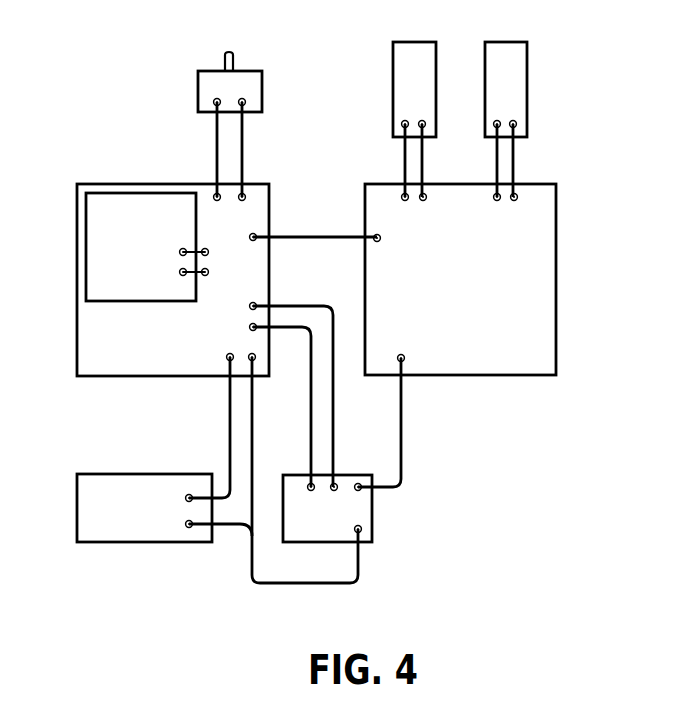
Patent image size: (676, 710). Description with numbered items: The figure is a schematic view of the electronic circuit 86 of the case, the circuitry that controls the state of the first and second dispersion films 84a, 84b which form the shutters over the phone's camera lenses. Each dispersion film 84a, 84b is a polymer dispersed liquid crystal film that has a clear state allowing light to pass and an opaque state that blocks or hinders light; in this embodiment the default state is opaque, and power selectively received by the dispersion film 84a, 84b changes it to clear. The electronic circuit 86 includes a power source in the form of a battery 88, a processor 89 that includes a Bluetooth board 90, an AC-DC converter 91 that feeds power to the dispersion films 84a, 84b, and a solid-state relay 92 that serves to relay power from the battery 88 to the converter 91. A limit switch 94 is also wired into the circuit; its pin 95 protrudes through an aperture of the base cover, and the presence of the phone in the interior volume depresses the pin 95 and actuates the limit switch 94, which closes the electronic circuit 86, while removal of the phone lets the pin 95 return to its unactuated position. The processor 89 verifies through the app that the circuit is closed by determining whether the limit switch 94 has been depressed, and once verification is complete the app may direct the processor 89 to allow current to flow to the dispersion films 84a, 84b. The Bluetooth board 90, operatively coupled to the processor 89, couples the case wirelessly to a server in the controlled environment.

The dispersion film 84a is at (408, 42).
The dispersion film 84b is at (505, 42).
The electronic circuit 86 is at (597, 112).
The battery 88 is at (77, 510).
The processor 89 is at (77, 323).
The Bluetooth board 90 is at (86, 226).
The AC-DC converter 91 is at (556, 348).
The solid-state relay 92 is at (372, 516).
The limit switch 94 is at (196, 84).
The pin 95 is at (232, 52).